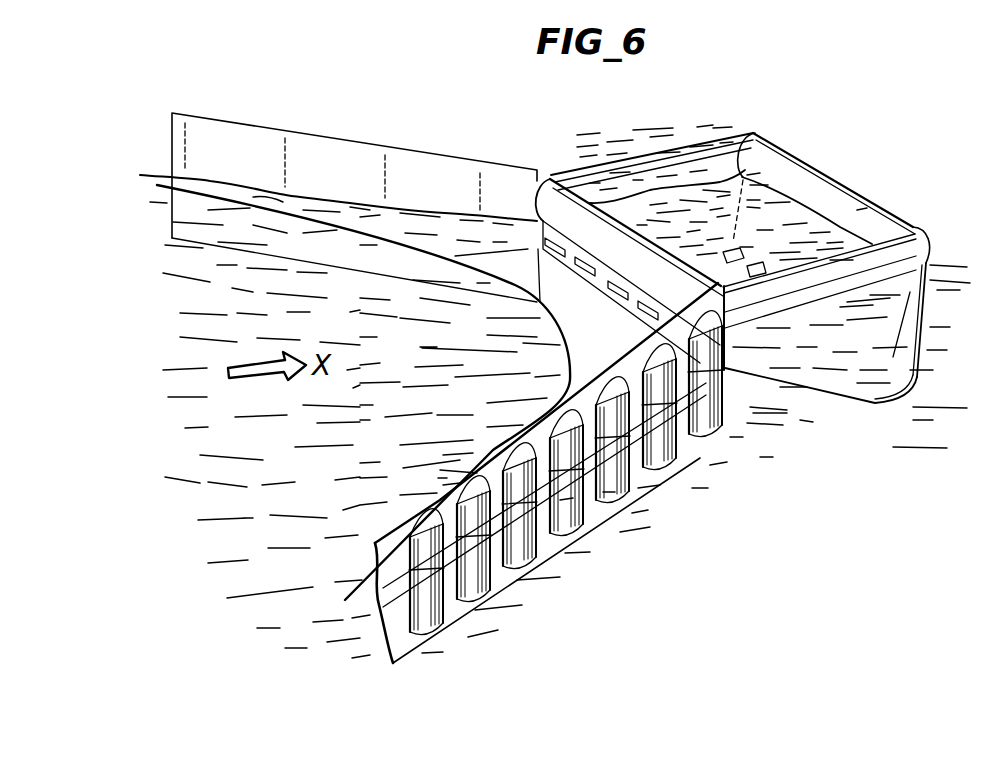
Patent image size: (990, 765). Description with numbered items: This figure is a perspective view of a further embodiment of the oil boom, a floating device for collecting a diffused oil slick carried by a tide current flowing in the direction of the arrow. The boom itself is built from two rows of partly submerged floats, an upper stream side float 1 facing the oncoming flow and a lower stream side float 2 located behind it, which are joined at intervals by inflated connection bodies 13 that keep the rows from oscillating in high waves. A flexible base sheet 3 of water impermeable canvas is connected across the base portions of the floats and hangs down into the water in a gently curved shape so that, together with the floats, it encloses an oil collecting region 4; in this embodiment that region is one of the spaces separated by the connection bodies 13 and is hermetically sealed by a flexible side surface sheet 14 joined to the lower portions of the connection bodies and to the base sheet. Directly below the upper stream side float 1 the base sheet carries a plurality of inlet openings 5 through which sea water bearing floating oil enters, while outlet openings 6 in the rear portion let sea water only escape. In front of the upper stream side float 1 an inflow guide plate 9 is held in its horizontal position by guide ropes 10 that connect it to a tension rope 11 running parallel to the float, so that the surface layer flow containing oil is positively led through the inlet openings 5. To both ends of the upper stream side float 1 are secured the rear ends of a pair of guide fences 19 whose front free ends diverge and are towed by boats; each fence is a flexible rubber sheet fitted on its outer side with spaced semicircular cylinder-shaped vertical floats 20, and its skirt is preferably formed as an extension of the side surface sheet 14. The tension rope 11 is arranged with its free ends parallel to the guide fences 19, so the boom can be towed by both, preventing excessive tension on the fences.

The upper stream side float 1 is at (631, 243).
The lower stream side float 2 is at (770, 152).
The flexible base sheet 3 is at (923, 283).
The oil collecting region 4 is at (798, 220).
The inlet openings 5 is at (583, 262).
The outlet openings 6 is at (745, 258).
The inflow guide plate 9 is at (543, 243).
The guide ropes 10 is at (488, 253).
The tension rope 11 is at (373, 238).
The connection bodies 13 is at (692, 157).
The flexible side surface sheet 14 is at (867, 393).
The guide fences 19 is at (337, 147).
The semicircular cylinder-shaped vertical floats 20 is at (667, 467).